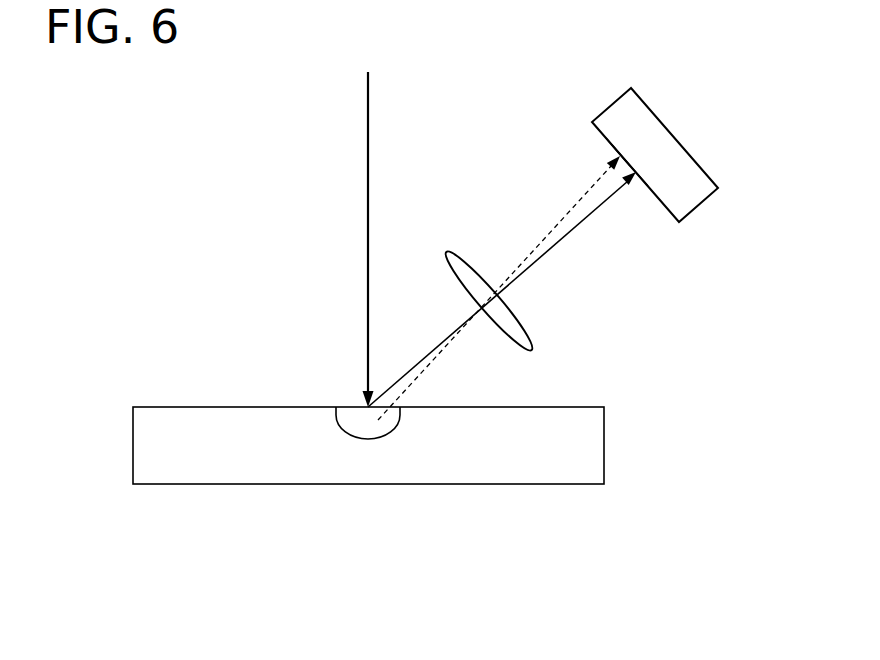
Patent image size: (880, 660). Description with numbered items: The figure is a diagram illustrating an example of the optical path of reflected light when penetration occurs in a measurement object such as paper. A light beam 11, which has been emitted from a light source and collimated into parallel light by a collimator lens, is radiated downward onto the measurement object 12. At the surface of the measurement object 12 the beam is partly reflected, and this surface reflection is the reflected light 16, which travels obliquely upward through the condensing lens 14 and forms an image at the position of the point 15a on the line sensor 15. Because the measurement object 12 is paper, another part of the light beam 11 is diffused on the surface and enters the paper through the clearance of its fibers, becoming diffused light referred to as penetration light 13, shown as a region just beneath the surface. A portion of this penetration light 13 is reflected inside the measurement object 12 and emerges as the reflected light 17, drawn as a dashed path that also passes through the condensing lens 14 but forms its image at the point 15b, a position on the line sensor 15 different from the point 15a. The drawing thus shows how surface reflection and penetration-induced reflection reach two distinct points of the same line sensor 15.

The light beam 11 is at (367, 110).
The measurement object 12 is at (202, 407).
The penetration light 13 is at (368, 440).
The condensing lens 14 is at (463, 257).
The line sensor 15 is at (662, 118).
The point 15a is at (638, 170).
The point 15b is at (622, 156).
The reflected light 16 is at (593, 212).
The reflected light 17 is at (563, 213).